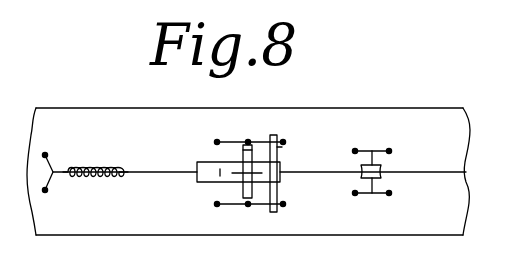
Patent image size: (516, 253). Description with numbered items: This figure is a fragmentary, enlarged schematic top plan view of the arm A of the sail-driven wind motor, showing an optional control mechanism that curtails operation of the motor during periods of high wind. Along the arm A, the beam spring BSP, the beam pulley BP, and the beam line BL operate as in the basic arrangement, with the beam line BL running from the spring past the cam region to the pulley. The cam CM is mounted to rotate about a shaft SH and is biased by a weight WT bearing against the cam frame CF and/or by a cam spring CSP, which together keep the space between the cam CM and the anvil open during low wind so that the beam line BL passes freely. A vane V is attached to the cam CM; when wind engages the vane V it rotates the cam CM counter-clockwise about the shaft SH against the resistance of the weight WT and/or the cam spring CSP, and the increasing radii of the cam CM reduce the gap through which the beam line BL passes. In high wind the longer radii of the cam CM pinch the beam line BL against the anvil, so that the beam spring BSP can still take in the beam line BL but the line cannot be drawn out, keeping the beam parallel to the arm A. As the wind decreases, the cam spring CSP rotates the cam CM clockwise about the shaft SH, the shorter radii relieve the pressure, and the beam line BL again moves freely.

The arm A is at (370, 108).
The beam spring BSP is at (90, 170).
The cam CM is at (205, 183).
The cam spring CSP is at (243, 163).
The cam frame CF is at (263, 203).
The shaft SH is at (252, 145).
The weight WT is at (277, 147).
The vane V is at (244, 145).
The beam pulley BP is at (380, 169).
The beam line BL is at (403, 173).